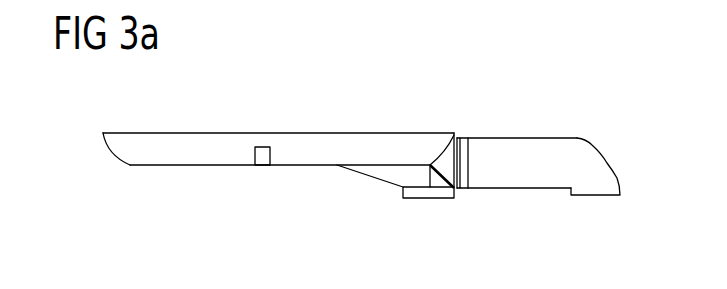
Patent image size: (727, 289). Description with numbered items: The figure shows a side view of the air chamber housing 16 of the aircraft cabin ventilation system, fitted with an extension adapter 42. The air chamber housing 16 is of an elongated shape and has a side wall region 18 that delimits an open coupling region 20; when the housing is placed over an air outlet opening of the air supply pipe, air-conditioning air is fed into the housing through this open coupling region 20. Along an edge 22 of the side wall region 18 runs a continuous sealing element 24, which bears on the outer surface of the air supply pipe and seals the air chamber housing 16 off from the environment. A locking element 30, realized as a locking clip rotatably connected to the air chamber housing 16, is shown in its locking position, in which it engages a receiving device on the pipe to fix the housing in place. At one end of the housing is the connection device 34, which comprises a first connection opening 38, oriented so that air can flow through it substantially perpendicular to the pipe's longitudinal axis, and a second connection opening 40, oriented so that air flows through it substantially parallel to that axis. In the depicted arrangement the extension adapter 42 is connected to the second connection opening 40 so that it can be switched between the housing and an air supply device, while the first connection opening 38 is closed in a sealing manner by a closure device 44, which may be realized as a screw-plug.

The air chamber housing 16 is at (576, 88).
The open coupling region 20 is at (228, 110).
The edge 22 is at (105, 145).
The sealing element 24 is at (357, 133).
The side wall region 18 is at (129, 163).
The locking element 30 is at (260, 168).
The connection device 34 is at (390, 178).
The first connection opening 38 is at (433, 198).
The closure device 44 is at (456, 189).
The second connection opening 40 is at (469, 161).
The extension adapter 42 is at (592, 155).